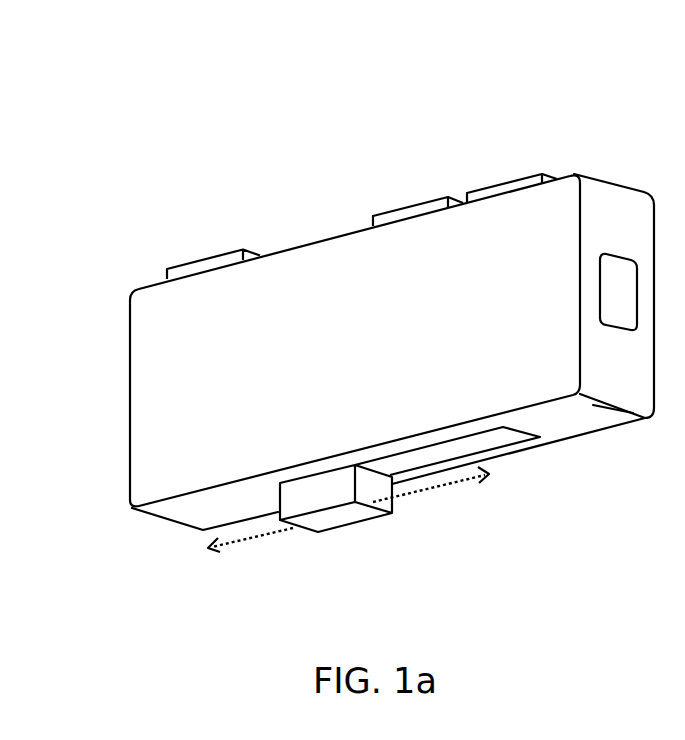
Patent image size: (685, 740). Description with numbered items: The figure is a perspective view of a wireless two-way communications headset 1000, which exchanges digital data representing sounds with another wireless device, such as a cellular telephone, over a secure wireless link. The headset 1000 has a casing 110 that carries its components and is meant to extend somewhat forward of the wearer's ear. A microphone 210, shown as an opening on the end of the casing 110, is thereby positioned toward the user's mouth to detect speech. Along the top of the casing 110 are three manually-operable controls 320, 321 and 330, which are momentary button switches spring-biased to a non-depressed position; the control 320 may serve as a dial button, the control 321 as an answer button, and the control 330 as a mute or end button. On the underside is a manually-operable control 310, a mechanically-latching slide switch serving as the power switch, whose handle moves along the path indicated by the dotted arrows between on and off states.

The wireless two-way communications headset 1000 is at (250, 55).
The casing 110 is at (246, 390).
The microphone 210 is at (617, 307).
The manually-operable control 310 is at (337, 517).
The manually-operable control 320 is at (485, 182).
The manually-operable control 321 is at (430, 198).
The manually-operable control 330 is at (225, 252).